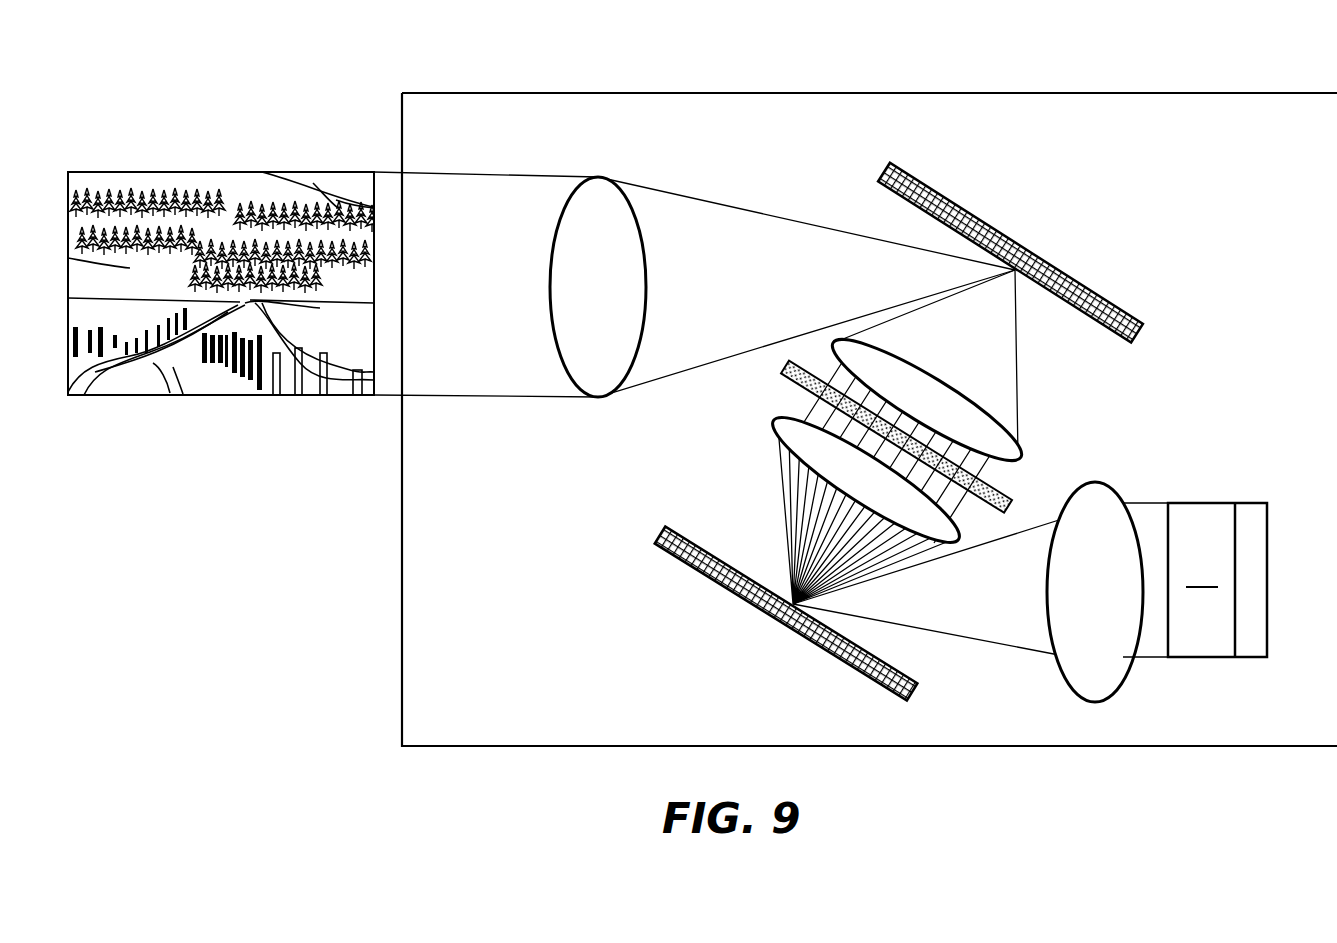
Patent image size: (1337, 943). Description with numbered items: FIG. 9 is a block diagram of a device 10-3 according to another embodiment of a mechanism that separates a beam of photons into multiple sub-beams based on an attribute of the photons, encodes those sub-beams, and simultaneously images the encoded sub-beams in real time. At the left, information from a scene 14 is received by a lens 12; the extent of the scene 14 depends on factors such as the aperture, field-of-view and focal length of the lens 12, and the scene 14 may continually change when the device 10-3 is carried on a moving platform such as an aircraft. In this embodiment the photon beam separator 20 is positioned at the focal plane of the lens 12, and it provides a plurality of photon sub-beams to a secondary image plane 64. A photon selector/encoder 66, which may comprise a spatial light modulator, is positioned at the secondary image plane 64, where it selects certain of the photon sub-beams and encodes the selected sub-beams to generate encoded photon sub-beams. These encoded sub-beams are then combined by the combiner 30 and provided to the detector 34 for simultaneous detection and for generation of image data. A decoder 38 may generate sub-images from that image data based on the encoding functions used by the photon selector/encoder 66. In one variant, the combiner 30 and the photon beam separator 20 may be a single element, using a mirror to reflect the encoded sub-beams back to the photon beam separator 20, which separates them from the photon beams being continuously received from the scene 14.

The device 10-3 is at (1197, 93).
The scene 14 is at (220, 171).
The lens 12 is at (600, 190).
The photon beam separator 20 is at (993, 228).
The secondary image plane 64 is at (848, 405).
The photon selector/encoder 66 is at (793, 383).
The combiner 30 is at (715, 584).
The detector 34 is at (1202, 574).
The decoder 38 is at (1247, 580).